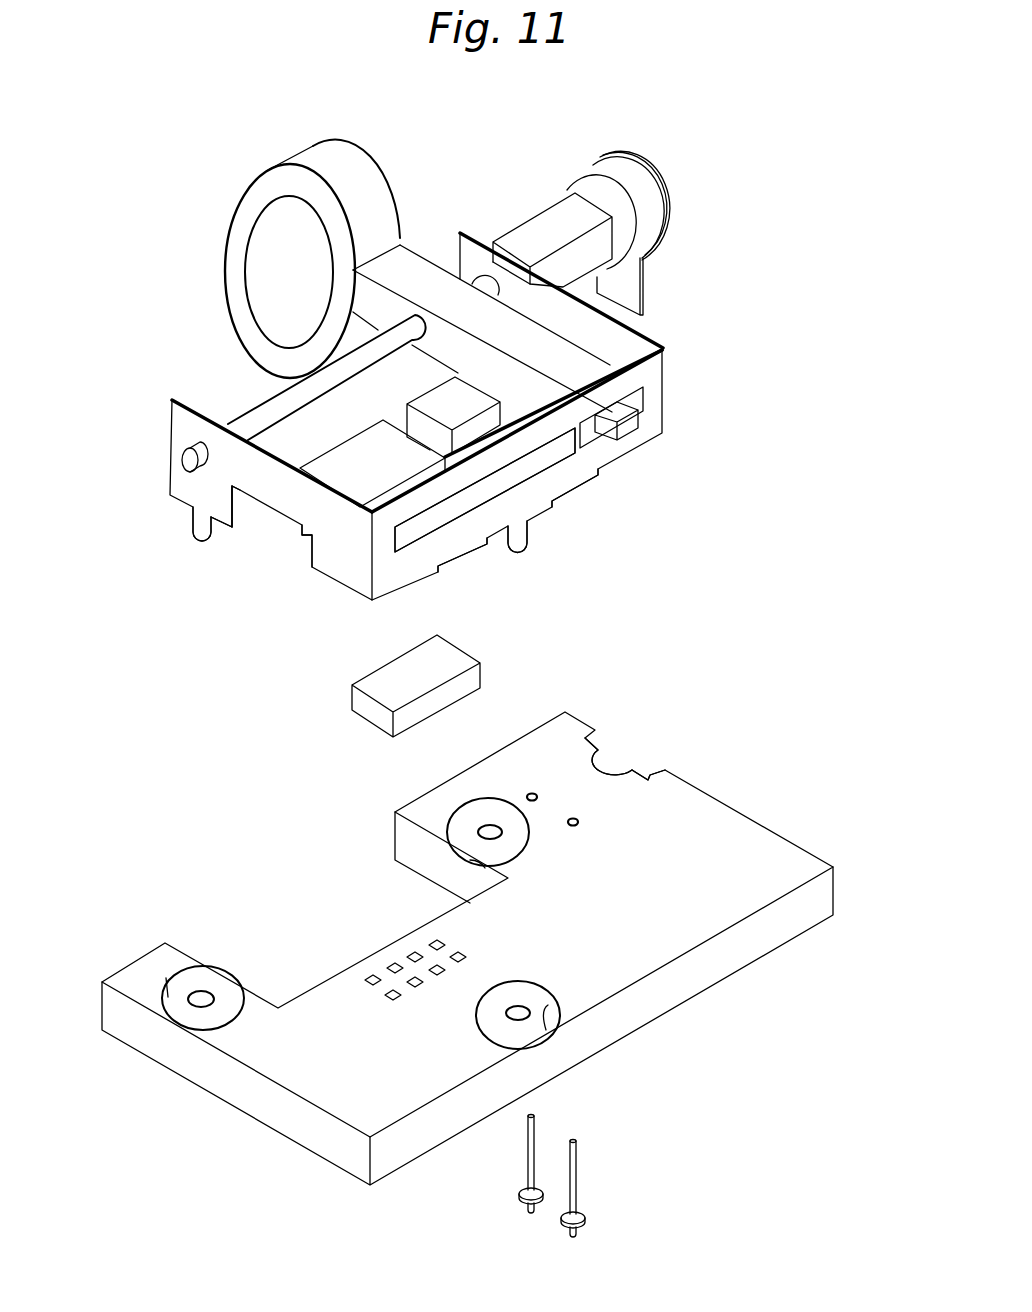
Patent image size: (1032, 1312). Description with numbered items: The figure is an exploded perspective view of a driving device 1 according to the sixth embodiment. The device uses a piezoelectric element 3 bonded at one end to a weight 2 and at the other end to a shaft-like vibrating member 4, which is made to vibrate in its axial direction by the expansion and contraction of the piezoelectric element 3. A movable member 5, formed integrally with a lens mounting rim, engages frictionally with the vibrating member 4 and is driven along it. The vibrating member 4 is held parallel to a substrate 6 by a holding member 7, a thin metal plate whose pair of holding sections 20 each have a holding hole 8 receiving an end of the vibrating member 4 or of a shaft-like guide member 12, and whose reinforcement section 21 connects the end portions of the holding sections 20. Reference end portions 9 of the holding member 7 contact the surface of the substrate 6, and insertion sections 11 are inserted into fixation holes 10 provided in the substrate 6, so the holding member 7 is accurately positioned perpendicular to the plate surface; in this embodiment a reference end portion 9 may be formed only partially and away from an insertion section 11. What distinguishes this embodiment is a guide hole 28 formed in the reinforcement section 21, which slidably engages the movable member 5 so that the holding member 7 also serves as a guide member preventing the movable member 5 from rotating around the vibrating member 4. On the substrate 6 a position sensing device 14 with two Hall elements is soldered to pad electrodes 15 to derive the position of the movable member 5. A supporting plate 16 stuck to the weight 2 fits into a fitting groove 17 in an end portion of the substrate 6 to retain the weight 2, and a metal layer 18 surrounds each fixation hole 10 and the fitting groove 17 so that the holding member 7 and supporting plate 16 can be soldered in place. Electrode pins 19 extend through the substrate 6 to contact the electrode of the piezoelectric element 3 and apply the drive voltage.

The driving device 1 is at (510, 185).
The weight 2 is at (611, 172).
The piezoelectric element 3 is at (540, 229).
The vibrating member 4 is at (260, 410).
The movable member 5 is at (434, 295).
The substrate 6 is at (720, 833).
The holding member 7 is at (170, 396).
The holding hole 8 is at (198, 440).
The reference end portion 9 is at (182, 500).
The fixation hole 10 is at (492, 828).
The insertion section 11 is at (193, 530).
The guide member 12 is at (362, 460).
The position sensing device 14 is at (372, 713).
The pad electrode 15 is at (413, 955).
The supporting plate 16 is at (644, 299).
The fitting groove 17 is at (649, 775).
The metal layer 18 is at (618, 760).
The electrode pin 19 is at (522, 1168).
The holding section 20 is at (272, 492).
The reinforcement section 21 is at (540, 486).
The guide hole 28 is at (568, 455).